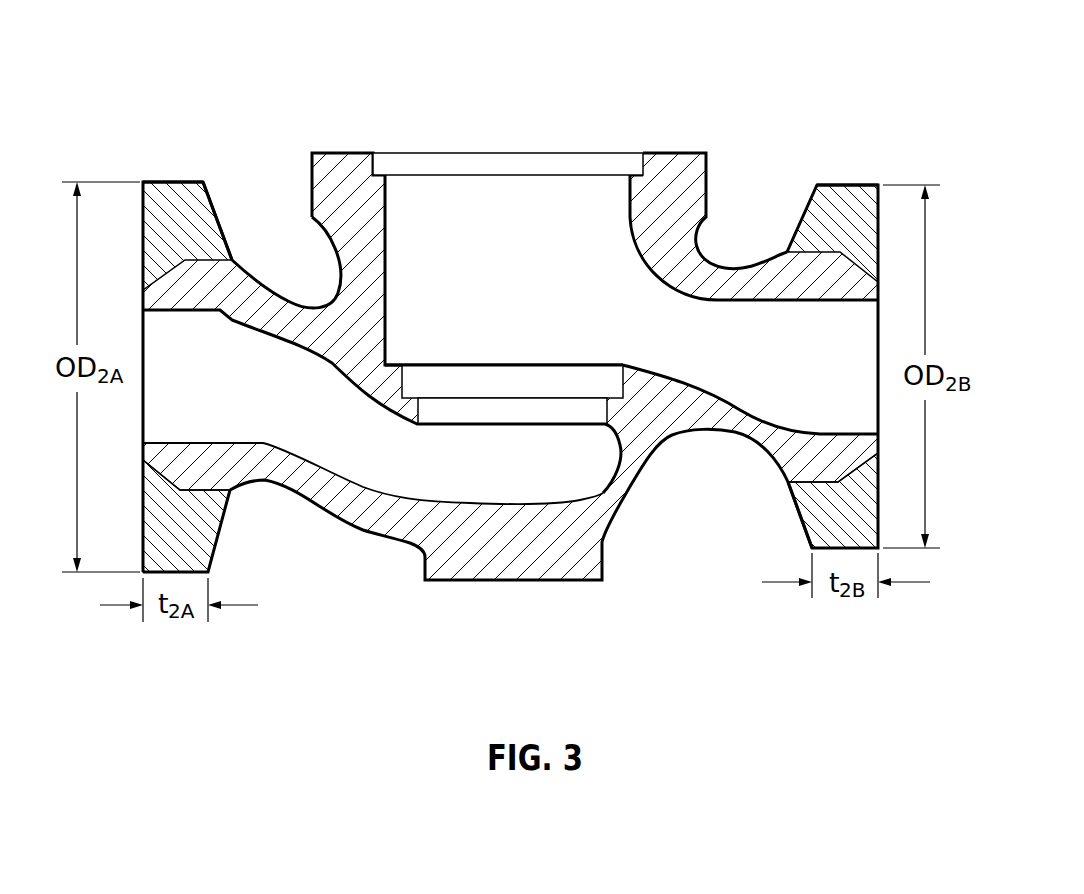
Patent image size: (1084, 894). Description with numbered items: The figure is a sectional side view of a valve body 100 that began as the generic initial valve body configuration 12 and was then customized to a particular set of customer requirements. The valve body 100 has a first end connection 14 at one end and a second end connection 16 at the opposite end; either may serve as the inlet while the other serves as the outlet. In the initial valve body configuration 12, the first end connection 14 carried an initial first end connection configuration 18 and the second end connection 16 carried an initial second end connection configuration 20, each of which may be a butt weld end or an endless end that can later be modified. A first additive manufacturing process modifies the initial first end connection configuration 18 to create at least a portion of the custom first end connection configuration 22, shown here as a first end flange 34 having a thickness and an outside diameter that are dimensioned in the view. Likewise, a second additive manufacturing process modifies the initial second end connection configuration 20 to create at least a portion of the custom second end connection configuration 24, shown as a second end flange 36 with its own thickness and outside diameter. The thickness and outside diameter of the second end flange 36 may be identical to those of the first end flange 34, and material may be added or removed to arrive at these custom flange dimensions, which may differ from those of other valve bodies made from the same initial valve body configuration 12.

The valve body 100 is at (406, 60).
The initial valve body configuration 12 is at (665, 152).
The first end connection 14 is at (191, 125).
The second end connection 16 is at (875, 147).
The initial first end connection configuration 18 is at (177, 462).
The initial second end connection configuration 20 is at (793, 469).
The custom first end connection configuration 22 is at (222, 165).
The custom second end connection configuration 24 is at (755, 553).
The first end flange 34 is at (148, 170).
The second end flange 36 is at (824, 160).